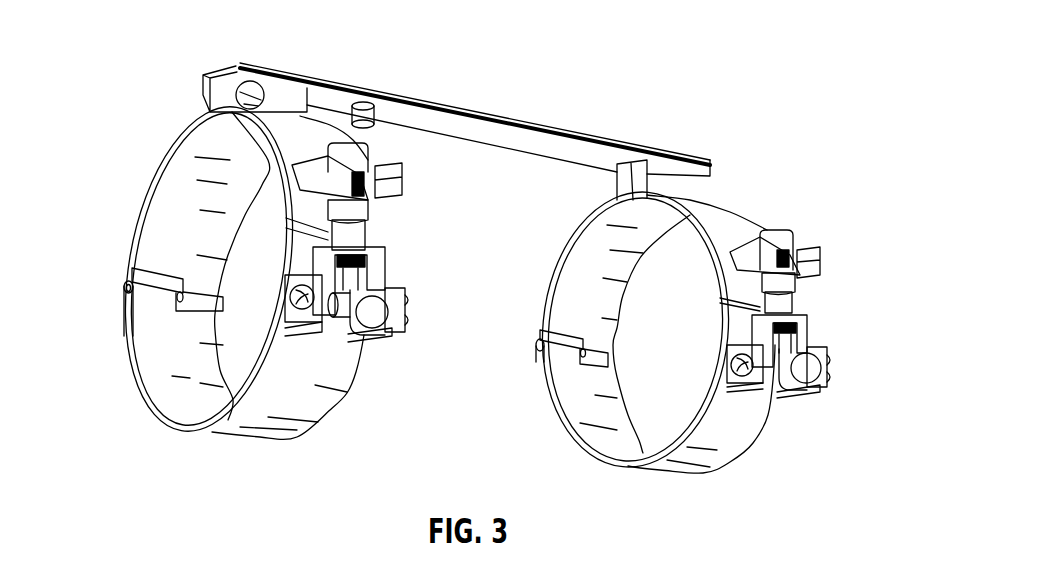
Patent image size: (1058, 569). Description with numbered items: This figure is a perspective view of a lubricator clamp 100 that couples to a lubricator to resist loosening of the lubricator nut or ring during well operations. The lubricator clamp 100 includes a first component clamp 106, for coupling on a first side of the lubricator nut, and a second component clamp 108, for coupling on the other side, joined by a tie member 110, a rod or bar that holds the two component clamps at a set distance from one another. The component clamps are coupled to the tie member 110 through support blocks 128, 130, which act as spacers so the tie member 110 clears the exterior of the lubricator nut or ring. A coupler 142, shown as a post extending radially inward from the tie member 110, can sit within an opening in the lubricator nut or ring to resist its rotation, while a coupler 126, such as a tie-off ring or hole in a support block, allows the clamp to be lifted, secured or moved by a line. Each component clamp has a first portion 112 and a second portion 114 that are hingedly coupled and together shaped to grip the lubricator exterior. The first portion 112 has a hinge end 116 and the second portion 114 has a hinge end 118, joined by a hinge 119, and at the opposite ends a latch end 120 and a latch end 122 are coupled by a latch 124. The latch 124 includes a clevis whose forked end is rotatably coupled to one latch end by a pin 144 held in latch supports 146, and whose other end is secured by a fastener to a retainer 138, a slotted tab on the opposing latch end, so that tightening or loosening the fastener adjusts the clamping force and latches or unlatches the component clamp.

The lubricator clamp 100 is at (724, 33).
The first component clamp 106 is at (751, 204).
The second component clamp 108 is at (167, 103).
The tie member 110 is at (470, 108).
The first portion 112 is at (160, 172).
The second portion 114 is at (180, 425).
The hinge end 116 is at (210, 284).
The hinge end 118 is at (122, 325).
The hinge 119 is at (123, 288).
The latch end 120 is at (385, 232).
The latch end 122 is at (384, 266).
The latch 124 is at (833, 253).
The coupler 126 is at (245, 82).
The support block 128 is at (636, 165).
The support block 130 is at (288, 92).
The retainer 138 is at (392, 182).
The coupler 142 is at (366, 100).
The pin 144 is at (303, 318).
The latch support 146 is at (400, 302).